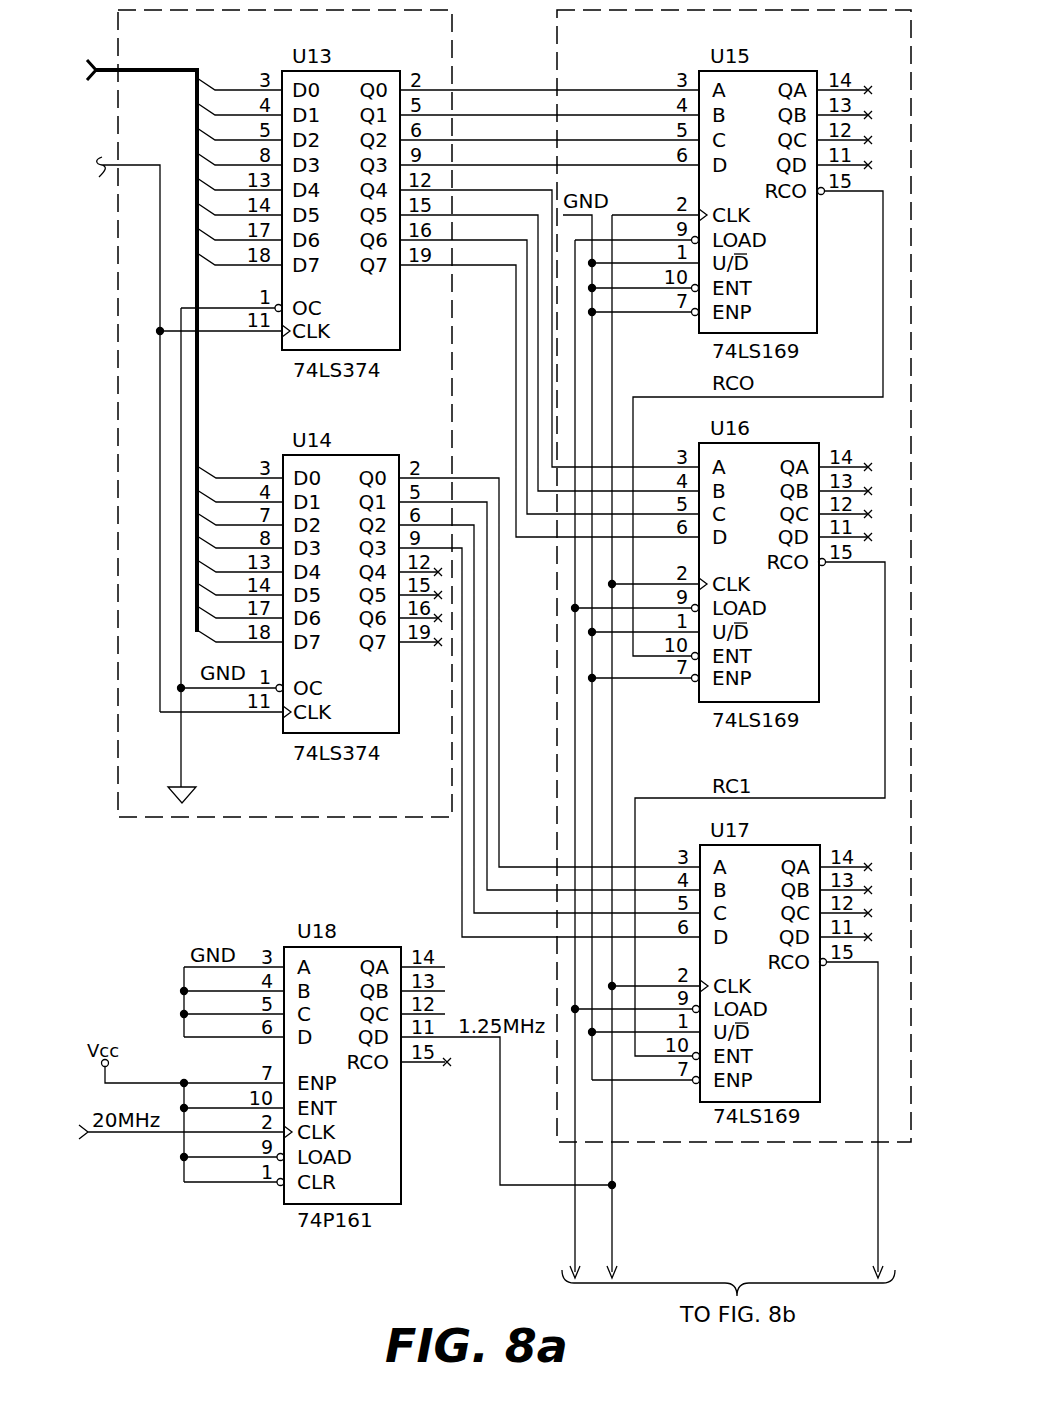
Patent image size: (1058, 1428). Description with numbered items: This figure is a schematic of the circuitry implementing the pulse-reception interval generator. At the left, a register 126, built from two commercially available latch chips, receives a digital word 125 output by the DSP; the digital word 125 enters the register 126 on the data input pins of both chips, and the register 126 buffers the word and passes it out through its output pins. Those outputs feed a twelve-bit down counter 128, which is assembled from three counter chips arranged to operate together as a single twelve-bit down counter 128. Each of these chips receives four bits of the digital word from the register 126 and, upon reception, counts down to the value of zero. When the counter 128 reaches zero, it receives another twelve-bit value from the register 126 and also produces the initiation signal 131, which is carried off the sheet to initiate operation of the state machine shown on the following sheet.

The digital word 125 is at (101, 66).
The register 126 is at (291, 818).
The 12-bit down counter 128 is at (763, 1143).
The initiation signal 131 is at (878, 1188).